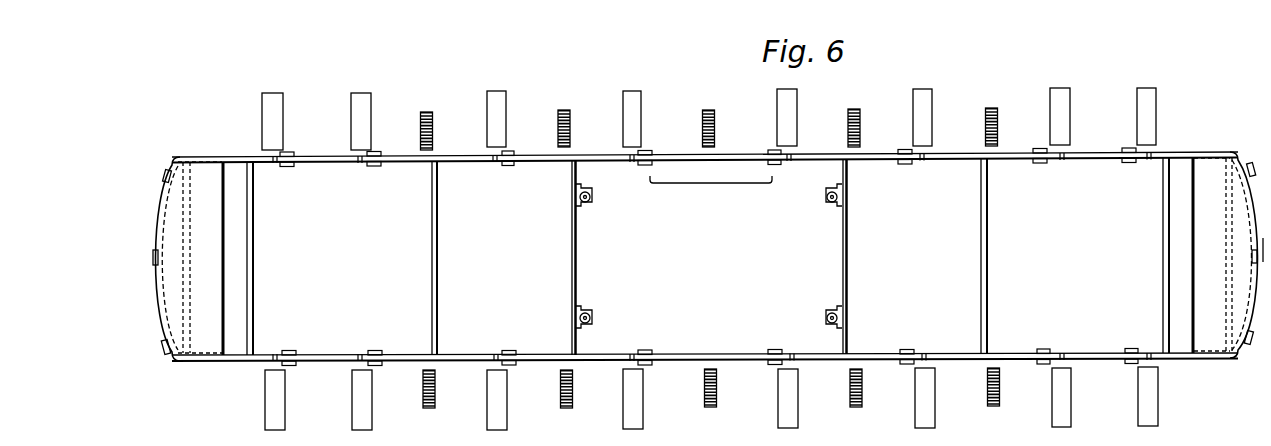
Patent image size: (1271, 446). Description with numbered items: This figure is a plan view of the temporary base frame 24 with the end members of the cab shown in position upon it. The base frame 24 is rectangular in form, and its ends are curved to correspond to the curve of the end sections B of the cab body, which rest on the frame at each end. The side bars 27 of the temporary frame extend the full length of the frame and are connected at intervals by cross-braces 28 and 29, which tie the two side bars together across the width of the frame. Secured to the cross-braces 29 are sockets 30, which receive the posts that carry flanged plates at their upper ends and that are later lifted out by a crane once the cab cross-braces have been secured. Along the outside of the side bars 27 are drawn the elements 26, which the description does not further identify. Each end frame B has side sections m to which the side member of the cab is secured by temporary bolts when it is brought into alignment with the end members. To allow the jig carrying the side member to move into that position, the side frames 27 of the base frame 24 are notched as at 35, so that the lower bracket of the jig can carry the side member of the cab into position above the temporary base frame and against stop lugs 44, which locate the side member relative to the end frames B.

The temporary base frame 24 is at (711, 190).
The wheels 26 is at (501, 113).
The side bars 27 is at (664, 163).
The cross-braces 28 is at (254, 273).
The cross-braces 29 is at (577, 235).
The sockets 30 is at (592, 196).
The notches 35 is at (633, 353).
The stop lugs 44 is at (254, 164).
The end sections of the cab body B is at (708, 256).
The side sections of the end frames m is at (205, 158).